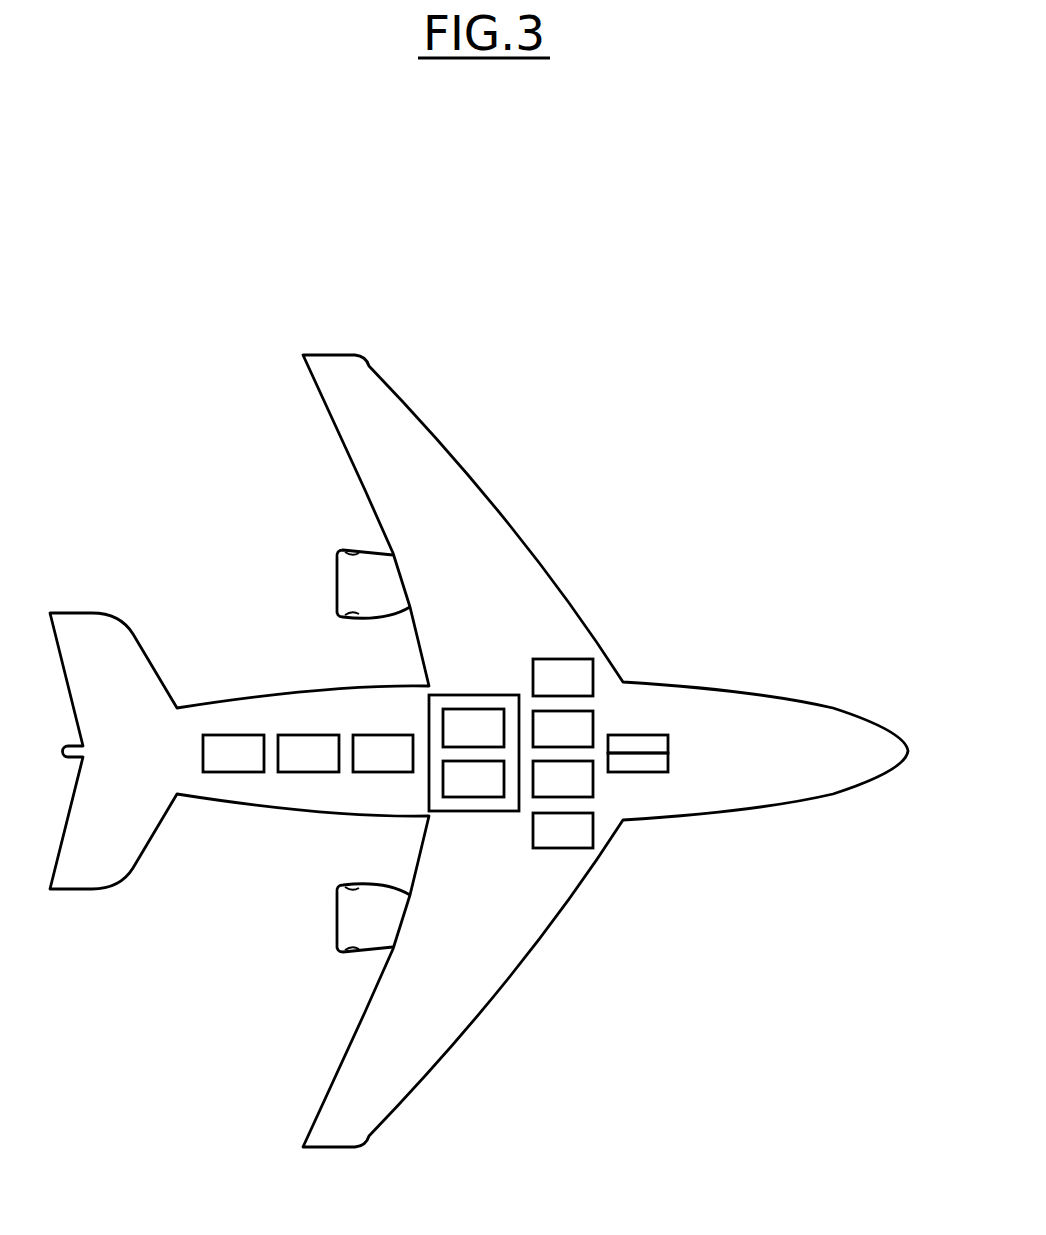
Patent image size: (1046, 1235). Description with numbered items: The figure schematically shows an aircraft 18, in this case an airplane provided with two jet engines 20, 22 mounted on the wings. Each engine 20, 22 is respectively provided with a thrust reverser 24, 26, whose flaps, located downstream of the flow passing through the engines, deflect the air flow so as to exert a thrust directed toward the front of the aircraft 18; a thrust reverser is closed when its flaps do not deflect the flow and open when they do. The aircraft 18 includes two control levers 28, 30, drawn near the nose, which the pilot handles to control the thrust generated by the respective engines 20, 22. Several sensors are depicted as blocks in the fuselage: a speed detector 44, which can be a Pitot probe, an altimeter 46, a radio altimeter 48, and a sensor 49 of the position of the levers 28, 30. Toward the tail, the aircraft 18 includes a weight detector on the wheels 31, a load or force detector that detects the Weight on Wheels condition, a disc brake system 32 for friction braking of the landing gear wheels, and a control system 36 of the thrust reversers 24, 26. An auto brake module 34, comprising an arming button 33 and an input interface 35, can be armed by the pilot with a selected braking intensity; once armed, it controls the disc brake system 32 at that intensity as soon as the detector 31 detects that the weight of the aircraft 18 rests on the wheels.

The aircraft 18 is at (893, 658).
The jet engine 20 is at (348, 597).
The jet engine 22 is at (348, 907).
The thrust reverser 24 is at (341, 614).
The thrust reverser 26 is at (342, 885).
The control lever 28 is at (665, 743).
The control lever 30 is at (665, 763).
The weight detector on the wheels 31 is at (248, 767).
The disc brake system 32 is at (323, 767).
The arming button 33 is at (488, 741).
The auto brake module 34 is at (474, 783).
The input interface 35 is at (473, 779).
The control system 36 is at (369, 767).
The speed detector 44 is at (549, 691).
The altimeter 46 is at (549, 741).
The radio altimeter 48 is at (549, 793).
The sensor 49 is at (549, 844).